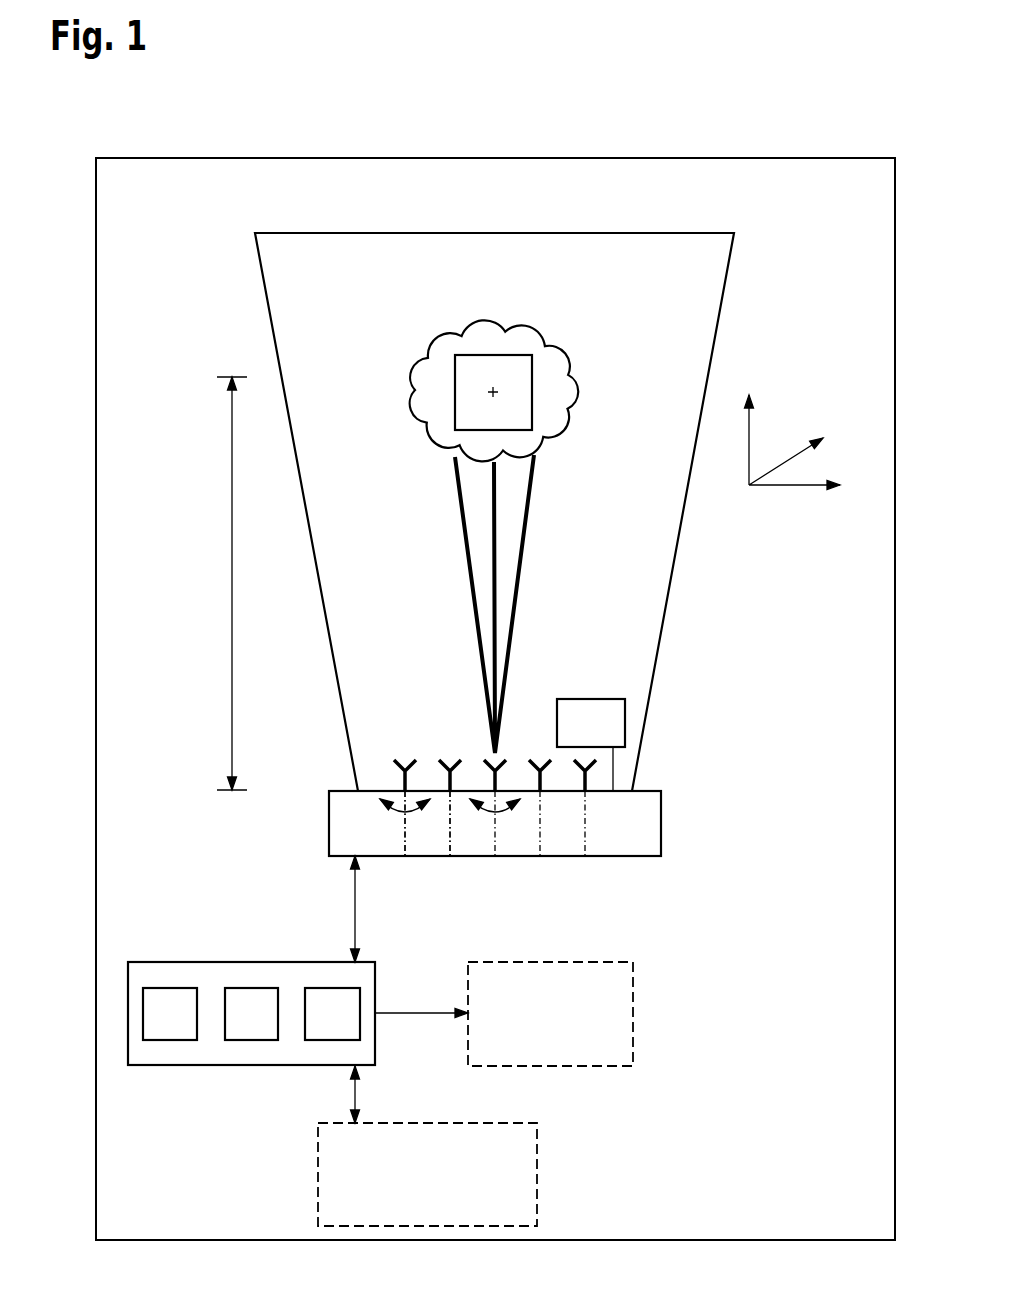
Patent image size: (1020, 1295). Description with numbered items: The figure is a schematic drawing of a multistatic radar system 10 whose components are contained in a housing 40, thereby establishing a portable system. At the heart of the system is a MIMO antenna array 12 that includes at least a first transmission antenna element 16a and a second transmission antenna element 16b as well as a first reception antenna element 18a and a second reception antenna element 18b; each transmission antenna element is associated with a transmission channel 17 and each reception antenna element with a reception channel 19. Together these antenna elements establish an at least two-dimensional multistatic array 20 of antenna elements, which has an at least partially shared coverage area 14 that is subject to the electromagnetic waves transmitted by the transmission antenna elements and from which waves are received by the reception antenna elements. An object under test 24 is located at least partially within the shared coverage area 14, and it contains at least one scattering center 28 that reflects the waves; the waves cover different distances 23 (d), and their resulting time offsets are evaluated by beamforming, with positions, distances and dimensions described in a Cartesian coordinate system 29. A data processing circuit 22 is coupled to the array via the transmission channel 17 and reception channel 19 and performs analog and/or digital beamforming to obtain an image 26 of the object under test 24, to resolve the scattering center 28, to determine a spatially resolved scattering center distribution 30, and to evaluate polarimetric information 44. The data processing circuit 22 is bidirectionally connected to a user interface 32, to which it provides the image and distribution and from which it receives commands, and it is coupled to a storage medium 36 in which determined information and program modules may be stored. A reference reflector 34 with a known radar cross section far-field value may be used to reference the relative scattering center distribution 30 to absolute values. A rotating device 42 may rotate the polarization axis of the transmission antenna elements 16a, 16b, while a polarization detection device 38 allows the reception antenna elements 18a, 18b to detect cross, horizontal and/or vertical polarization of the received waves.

The multistatic radar system 10 is at (735, 122).
The MIMO antenna array 12 is at (661, 828).
The at least partially shared coverage area 14 is at (733, 272).
The first transmission antenna element 16a is at (405, 760).
The second transmission antenna element 16b is at (597, 770).
The transmission channel 17 is at (408, 830).
The first reception antenna element 18a is at (450, 760).
The second reception antenna element 18b is at (500, 758).
The reception channel 19 is at (452, 830).
The two-dimensional multistatic array of antenna elements 20 is at (541, 703).
The data processing circuit 22 is at (251, 968).
The distance 23 is at (232, 462).
The object under test 24 is at (568, 342).
The image 26 is at (337, 988).
The scattering center 28 is at (493, 385).
The Cartesian coordinate system 29 is at (807, 378).
The spatially resolved scattering center distribution 30 is at (248, 988).
The user interface 32 is at (537, 1180).
The reference reflector 34 is at (625, 727).
The storage medium 36 is at (633, 1013).
The polarization detection device 38 is at (505, 812).
The housing 40 is at (548, 158).
The rotating device 42 is at (400, 812).
The polarimetric information 44 is at (165, 988).